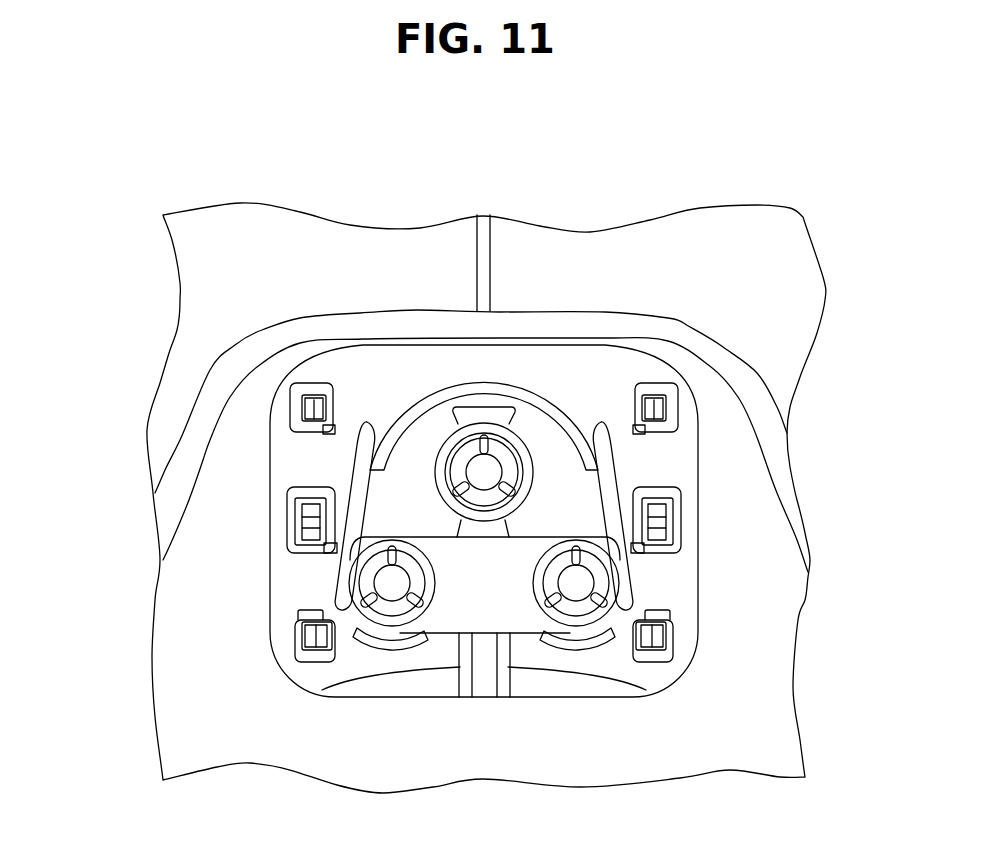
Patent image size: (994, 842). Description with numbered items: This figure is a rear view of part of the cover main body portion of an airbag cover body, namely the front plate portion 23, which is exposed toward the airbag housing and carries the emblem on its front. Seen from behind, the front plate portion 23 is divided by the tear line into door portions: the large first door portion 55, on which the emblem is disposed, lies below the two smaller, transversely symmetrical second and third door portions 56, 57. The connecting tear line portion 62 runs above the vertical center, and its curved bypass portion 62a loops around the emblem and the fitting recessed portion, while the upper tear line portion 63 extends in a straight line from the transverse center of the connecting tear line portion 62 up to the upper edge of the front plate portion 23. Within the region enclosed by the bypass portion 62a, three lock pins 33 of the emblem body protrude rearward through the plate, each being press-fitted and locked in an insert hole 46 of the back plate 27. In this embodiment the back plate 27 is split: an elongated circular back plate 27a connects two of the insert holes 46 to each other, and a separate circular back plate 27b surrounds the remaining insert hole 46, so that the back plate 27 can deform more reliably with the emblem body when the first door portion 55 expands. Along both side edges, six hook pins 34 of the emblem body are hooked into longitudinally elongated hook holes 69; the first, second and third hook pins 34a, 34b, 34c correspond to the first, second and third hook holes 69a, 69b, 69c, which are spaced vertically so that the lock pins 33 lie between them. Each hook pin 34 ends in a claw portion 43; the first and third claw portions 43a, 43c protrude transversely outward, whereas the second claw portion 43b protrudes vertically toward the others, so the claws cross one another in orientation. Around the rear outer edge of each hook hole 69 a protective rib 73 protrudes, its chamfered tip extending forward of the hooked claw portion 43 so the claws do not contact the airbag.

The front plate portion 23 is at (783, 730).
The first door portion 55 is at (787, 762).
The second door portion 56 is at (530, 240).
The third door portion 57 is at (428, 240).
The upper tear line portion 63 is at (473, 236).
The connecting tear line portion 62 is at (180, 437).
The bypass portion 62a is at (273, 326).
The back plate 27 is at (500, 410).
The back plate 27a is at (437, 636).
The circular back plate 27b is at (522, 432).
The lock pin 33 is at (470, 425).
The insert hole 46 is at (499, 468).
The hook pin 34 is at (476, 530).
The first hook pin 34a is at (300, 397).
The second hook pin 34b is at (293, 538).
The third hook pin 34c is at (332, 650).
The claw portion 43 is at (476, 528).
The first claw portion 43a is at (303, 410).
The second claw portion 43b is at (298, 503).
The third claw portion 43c is at (304, 643).
The hook hole 69 is at (476, 513).
The first hook hole 69a is at (340, 397).
The second hook hole 69b is at (334, 552).
The third hook hole 69c is at (336, 657).
The rib 73 is at (293, 433).